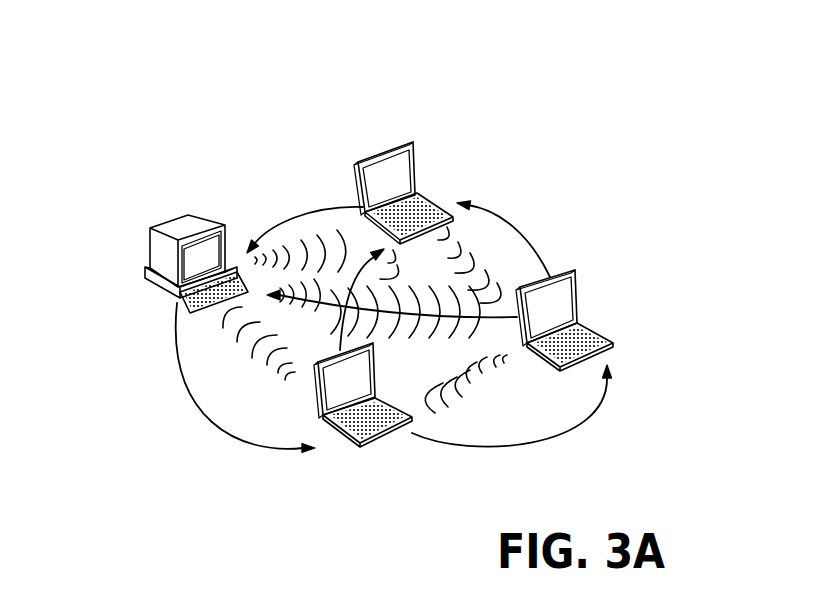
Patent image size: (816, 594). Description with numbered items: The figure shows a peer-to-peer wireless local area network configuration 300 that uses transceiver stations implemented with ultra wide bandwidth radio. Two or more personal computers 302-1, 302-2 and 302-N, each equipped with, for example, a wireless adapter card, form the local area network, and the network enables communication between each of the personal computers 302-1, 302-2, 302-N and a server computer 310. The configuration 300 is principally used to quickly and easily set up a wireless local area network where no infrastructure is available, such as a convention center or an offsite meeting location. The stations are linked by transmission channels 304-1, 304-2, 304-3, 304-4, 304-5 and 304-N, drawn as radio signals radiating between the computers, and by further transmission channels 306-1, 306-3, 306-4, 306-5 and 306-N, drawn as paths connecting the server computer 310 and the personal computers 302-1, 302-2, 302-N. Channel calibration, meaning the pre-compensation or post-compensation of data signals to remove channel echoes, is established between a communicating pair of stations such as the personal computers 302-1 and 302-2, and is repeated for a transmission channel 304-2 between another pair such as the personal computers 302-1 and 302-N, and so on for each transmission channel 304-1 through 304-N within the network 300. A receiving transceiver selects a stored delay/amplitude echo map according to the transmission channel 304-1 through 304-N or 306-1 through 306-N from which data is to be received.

The peer-to-peer wireless local area network configuration 300 is at (145, 521).
The personal computer 302-1 is at (418, 148).
The personal computer 302-2 is at (578, 285).
The personal computer 302-N is at (317, 408).
The transmission channel 304-1 is at (462, 250).
The transmission channel 304-2 is at (392, 278).
The transmission channel 304-3 is at (478, 382).
The transmission channel 304-4 is at (283, 243).
The transmission channel 304-5 is at (433, 327).
The transmission channel 304-N is at (237, 335).
The transmission channel 306-1 is at (514, 230).
The transmission channel 306-3 is at (513, 447).
The transmission channel 306-4 is at (293, 213).
The transmission channel 306-5 is at (318, 293).
The transmission channel 306-N is at (188, 401).
The server computer 310 is at (203, 219).